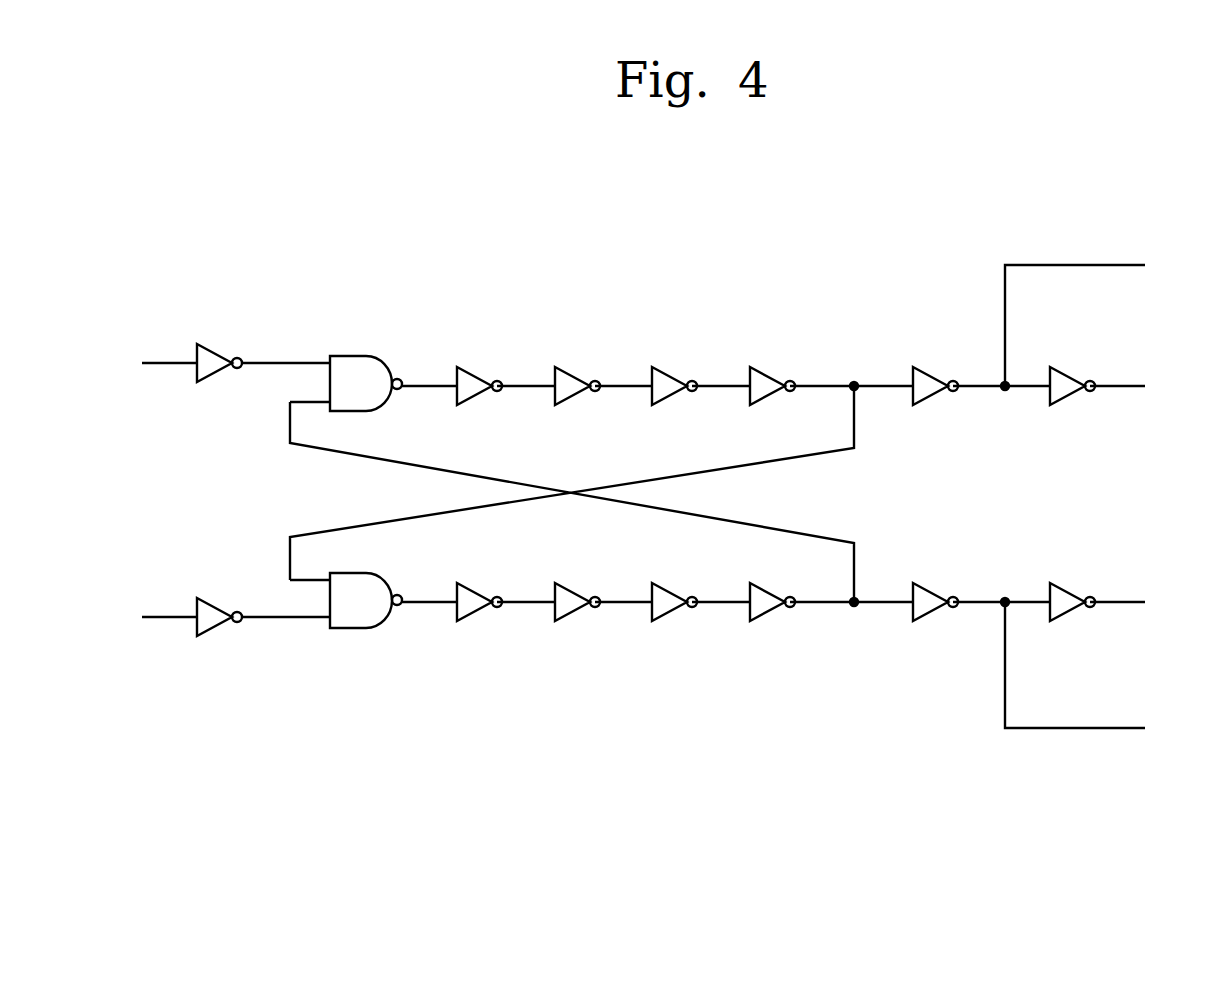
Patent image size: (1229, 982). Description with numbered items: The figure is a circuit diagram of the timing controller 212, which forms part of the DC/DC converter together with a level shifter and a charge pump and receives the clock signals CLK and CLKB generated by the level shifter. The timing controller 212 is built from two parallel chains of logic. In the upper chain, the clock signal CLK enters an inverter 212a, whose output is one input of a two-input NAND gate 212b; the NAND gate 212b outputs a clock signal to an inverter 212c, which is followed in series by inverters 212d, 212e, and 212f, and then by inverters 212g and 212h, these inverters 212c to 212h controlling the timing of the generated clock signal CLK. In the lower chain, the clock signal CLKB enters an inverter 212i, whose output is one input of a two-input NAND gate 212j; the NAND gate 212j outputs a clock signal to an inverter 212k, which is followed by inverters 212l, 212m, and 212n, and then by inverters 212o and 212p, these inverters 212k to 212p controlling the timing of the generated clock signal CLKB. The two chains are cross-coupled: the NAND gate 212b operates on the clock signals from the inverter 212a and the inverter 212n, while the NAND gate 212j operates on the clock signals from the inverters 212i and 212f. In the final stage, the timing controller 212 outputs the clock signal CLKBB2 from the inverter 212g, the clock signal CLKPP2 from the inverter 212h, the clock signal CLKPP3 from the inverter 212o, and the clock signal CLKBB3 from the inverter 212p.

The timing controller 212 is at (1033, 192).
The inverter 212a is at (243, 327).
The two-input NAND gate 212b is at (350, 356).
The inverter 212c is at (500, 347).
The inverter 212d is at (598, 347).
The inverter 212e is at (695, 347).
The inverter 212f is at (793, 349).
The inverter 212g is at (956, 349).
The inverter 212h is at (1093, 349).
The inverter 212i is at (214, 636).
The two-input NAND gate 212j is at (353, 628).
The inverter 212k is at (475, 611).
The inverter 212l is at (573, 611).
The inverter 212m is at (670, 611).
The inverter 212n is at (768, 611).
The inverter 212o is at (931, 611).
The inverter 212p is at (1068, 611).